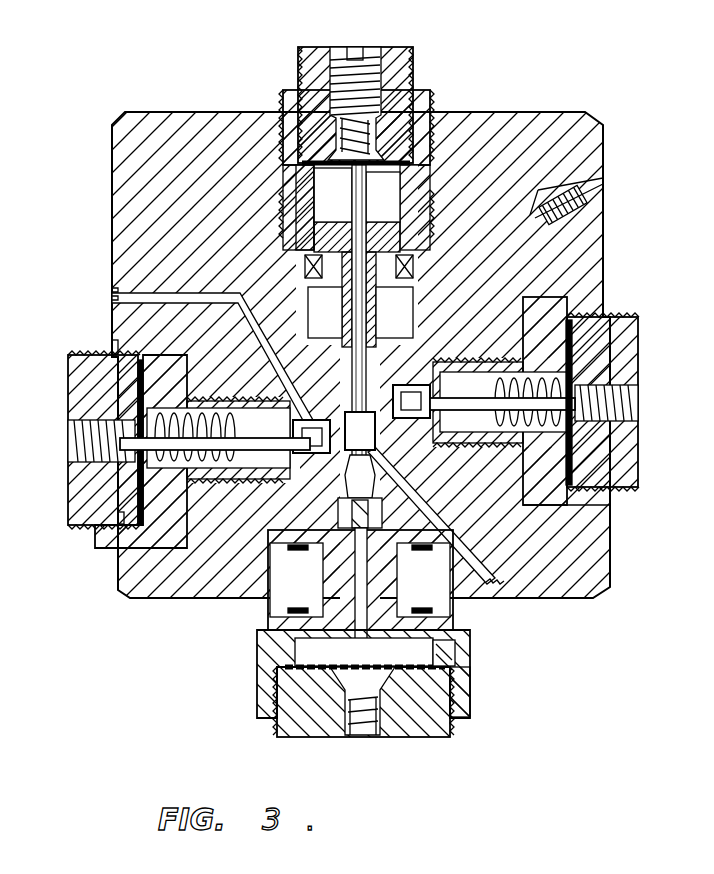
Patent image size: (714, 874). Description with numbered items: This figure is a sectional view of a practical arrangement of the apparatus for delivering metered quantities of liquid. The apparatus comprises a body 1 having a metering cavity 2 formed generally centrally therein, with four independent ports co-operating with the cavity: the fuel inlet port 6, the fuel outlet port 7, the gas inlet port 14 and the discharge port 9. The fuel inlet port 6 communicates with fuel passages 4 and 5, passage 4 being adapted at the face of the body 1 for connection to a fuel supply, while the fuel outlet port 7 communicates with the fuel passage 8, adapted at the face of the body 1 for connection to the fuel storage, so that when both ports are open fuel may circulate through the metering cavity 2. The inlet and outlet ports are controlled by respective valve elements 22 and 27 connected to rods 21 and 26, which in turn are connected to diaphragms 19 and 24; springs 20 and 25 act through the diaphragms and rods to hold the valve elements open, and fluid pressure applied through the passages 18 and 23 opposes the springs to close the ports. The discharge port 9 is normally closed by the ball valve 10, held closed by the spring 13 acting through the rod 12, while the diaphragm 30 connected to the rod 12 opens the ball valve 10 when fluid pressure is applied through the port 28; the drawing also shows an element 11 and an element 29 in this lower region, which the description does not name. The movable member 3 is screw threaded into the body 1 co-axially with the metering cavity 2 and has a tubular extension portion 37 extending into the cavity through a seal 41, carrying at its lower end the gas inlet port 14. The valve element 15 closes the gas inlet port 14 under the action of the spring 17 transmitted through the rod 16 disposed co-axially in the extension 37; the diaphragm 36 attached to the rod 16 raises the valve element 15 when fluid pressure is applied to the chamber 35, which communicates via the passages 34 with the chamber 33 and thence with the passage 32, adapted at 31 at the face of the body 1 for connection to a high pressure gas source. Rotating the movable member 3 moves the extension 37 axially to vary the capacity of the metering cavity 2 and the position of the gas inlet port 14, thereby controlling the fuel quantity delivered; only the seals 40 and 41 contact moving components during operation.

The body 1 is at (160, 118).
The metering cavity 2 is at (480, 540).
The movable member 3 is at (298, 118).
The fuel passage 4 is at (112, 290).
The fuel passage 5 is at (310, 320).
The fuel inlet port 6 is at (340, 520).
The fuel outlet port 7 is at (480, 475).
The fuel passage 8 is at (470, 565).
The discharge port 9 is at (350, 545).
The ball valve 10 is at (270, 612).
The inclined passage 11 is at (490, 585).
The rod 12 is at (262, 645).
The spring 13 is at (440, 725).
The gas inlet port 14 is at (250, 315).
The valve element 15 is at (385, 330).
The rod 16 is at (420, 162).
The spring 17 is at (398, 140).
The passage 18 is at (130, 455).
The diaphragm 19 is at (150, 500).
The spring 20 is at (130, 443).
The rod 21 is at (175, 420).
The valve element 22 is at (140, 370).
The passage 23 is at (330, 430).
The diaphragm 24 is at (600, 340).
The spring 25 is at (540, 400).
The rod 26 is at (545, 460).
The valve element 27 is at (520, 445).
The port 28 is at (440, 660).
The seal 29 is at (455, 680).
The diaphragm 30 is at (462, 700).
The connection at the face of the body 31 is at (585, 205).
The passage 32 is at (495, 215).
The chamber 33 is at (402, 310).
The passages 34 is at (325, 285).
The chamber 35 is at (342, 197).
The diaphragm 36 is at (300, 170).
The tubular extension portion 37 is at (305, 290).
The seal 40 is at (300, 265).
The seal 41 is at (420, 392).